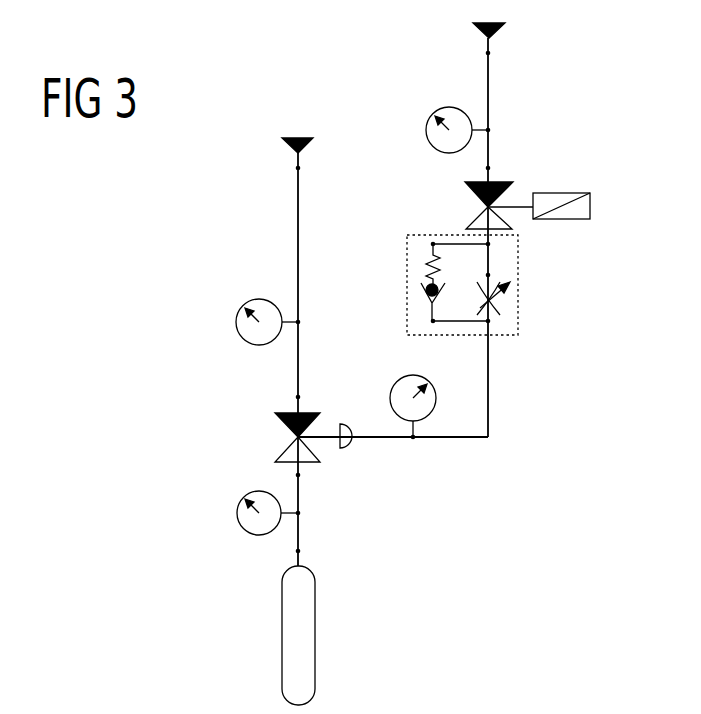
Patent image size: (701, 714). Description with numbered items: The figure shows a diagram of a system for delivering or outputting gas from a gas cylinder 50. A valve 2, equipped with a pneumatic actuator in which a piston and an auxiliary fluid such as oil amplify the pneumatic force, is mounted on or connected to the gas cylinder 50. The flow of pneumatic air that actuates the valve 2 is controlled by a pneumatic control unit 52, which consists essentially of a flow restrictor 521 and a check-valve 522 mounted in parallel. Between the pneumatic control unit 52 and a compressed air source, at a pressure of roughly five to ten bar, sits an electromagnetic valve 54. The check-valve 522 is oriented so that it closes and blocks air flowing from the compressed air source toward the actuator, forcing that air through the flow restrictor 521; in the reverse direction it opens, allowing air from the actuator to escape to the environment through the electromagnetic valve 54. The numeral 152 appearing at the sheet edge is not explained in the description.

The electromagnetic valve 54 is at (493, 185).
The pneumatic control unit 52 is at (482, 285).
The flow restrictor 521 is at (490, 300).
The check-valve 522 is at (423, 288).
The valve 2 is at (283, 428).
The gas cylinder 50 is at (290, 630).
The gas supply system 152 is at (580, 706).